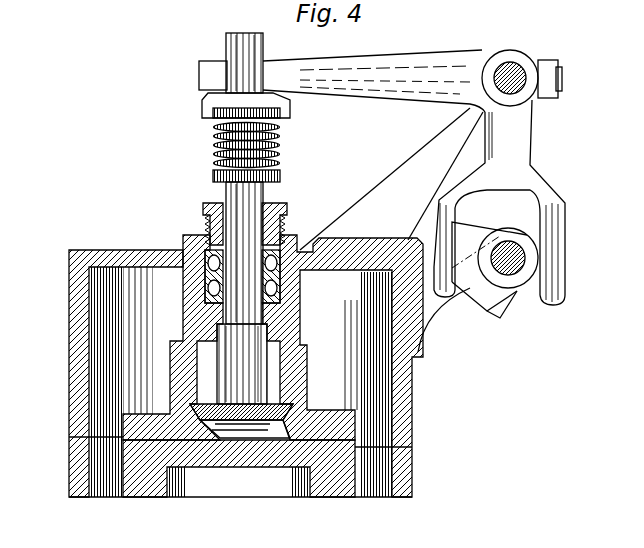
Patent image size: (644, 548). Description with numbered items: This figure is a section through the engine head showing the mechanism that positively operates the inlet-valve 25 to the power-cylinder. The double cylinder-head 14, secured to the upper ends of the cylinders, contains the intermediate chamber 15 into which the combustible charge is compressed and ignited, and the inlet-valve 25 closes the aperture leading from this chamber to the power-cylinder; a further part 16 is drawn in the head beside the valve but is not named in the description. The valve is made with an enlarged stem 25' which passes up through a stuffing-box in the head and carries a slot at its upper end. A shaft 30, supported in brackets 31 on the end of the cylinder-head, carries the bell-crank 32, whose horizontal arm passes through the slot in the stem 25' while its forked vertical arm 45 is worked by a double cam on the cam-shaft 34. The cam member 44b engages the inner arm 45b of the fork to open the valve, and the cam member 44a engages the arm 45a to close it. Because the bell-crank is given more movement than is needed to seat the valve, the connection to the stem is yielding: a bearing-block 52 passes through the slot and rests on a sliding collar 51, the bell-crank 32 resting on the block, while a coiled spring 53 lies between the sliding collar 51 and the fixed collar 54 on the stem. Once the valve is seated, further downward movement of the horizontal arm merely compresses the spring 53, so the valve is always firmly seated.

The double cylinder-head 14 is at (69, 332).
The intermediate chamber 15 is at (217, 327).
The valve plunger 16 is at (223, 356).
The inlet-valve 25 is at (273, 366).
The valve-stem 25' is at (223, 177).
The shaft 30 is at (514, 65).
The brackets 31 is at (432, 160).
The bell-crank 32 is at (429, 63).
The cam-shaft 34 is at (523, 274).
The cam member 44a is at (494, 302).
The cam member 44b is at (473, 284).
The vertical arm 45 is at (520, 146).
The arm 45a is at (565, 208).
The inner arm 45b is at (435, 230).
The sliding collar 51 is at (213, 113).
The bearing-block 52 is at (210, 100).
The coiled spring 53 is at (213, 143).
The fixed collar 54 is at (213, 176).